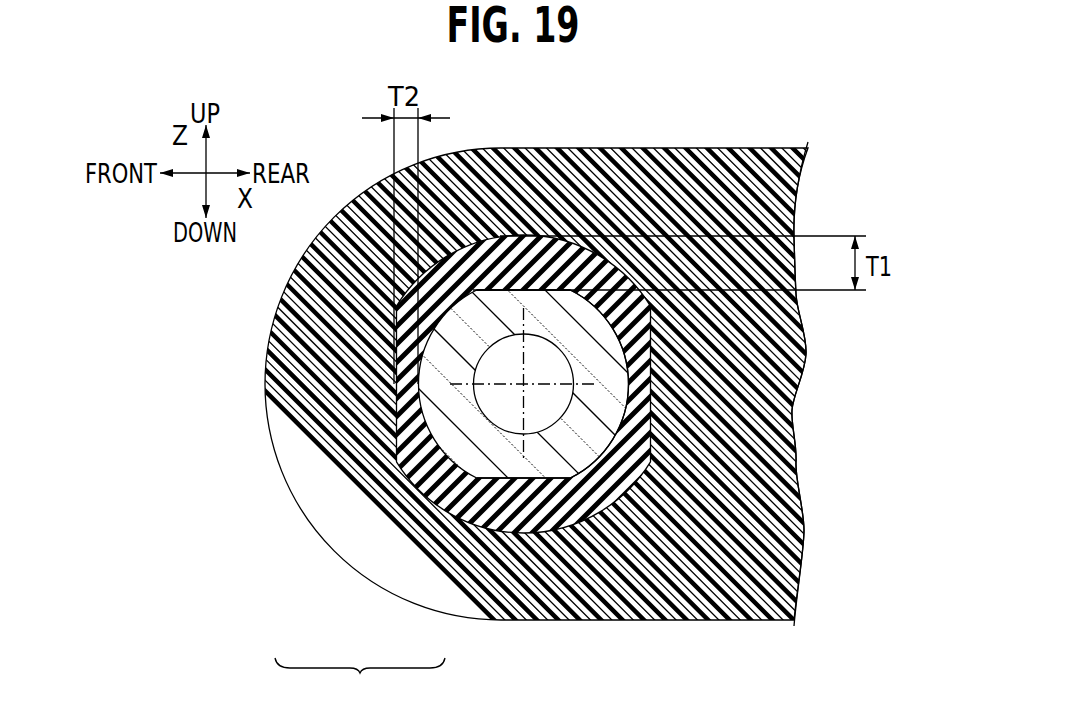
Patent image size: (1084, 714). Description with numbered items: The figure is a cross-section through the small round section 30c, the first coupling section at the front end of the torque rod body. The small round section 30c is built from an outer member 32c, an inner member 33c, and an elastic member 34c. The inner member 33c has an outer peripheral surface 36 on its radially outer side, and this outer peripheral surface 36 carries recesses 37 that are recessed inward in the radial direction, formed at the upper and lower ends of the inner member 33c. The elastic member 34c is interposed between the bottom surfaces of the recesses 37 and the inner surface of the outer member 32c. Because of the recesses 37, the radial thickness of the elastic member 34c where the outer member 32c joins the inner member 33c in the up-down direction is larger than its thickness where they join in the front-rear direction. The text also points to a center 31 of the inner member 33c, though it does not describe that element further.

The small round section 30c is at (360, 682).
The cushion center / core 31 is at (522, 380).
The outer member 32c is at (345, 457).
The inner member 33c is at (467, 453).
The elastic member 34c is at (420, 452).
The outer peripheral surface 36 is at (612, 443).
The recesses 37 is at (523, 480).